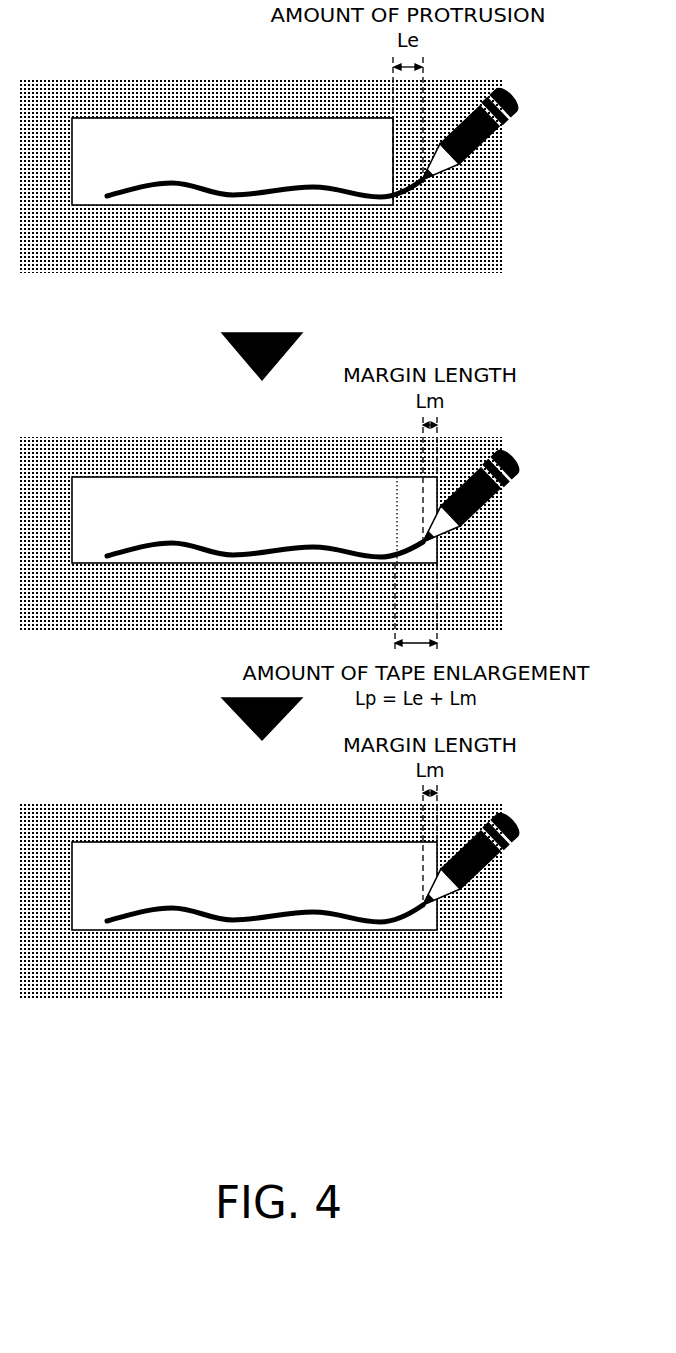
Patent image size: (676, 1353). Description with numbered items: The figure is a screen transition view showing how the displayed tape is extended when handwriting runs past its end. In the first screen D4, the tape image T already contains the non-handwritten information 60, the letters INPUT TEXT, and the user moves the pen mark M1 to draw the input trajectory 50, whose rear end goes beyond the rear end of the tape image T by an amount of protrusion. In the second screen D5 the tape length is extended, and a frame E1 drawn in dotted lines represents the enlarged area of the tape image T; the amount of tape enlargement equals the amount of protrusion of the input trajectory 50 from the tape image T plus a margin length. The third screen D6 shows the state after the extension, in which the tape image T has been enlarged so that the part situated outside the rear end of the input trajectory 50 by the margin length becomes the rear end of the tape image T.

The non-handwritten information 60 is at (163, 120).
The input trajectory 50 is at (140, 212).
The tape image T is at (258, 207).
The pen mark M1 is at (506, 103).
The frame E1 is at (403, 475).
The screen D4 is at (502, 166).
The screen D5 is at (502, 527).
The screen D6 is at (502, 888).